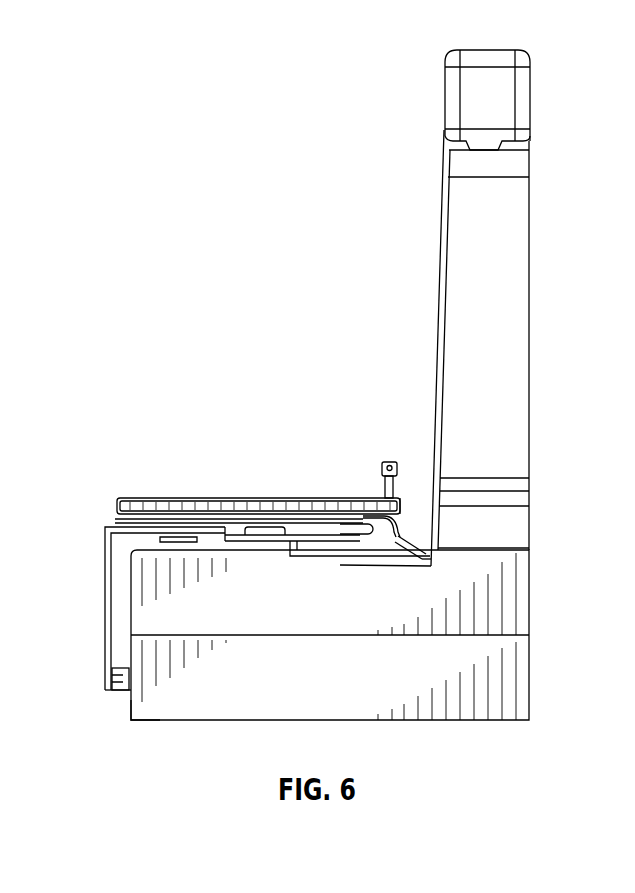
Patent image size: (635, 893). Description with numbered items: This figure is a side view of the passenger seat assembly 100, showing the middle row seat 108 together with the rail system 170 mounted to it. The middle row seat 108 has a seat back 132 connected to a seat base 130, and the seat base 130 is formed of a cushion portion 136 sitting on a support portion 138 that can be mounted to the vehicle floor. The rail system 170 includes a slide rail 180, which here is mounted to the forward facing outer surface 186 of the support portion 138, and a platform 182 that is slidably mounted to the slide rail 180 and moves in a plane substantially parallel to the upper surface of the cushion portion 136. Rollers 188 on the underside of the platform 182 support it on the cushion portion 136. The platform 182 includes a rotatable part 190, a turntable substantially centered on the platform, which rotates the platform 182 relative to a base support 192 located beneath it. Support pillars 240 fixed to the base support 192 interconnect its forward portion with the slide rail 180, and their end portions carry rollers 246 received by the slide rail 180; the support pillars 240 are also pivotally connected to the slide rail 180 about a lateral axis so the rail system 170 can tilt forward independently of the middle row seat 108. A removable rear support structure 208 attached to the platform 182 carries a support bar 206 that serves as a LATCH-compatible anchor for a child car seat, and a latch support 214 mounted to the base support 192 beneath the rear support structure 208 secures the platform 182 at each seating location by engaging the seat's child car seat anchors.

The passenger seat assembly 100 is at (325, 245).
The middle row seat 108 is at (538, 196).
The seat back 132 is at (512, 283).
The rear support structure 208 is at (398, 490).
The seat base 130 is at (511, 609).
The cushion portion 136 is at (317, 627).
The support portion 138 is at (235, 705).
The forward facing outer surface 186 is at (128, 720).
The rail system 170 is at (177, 447).
The platform 182 is at (222, 497).
The rotatable part 190 is at (282, 516).
The support pillars 240 is at (108, 600).
The base support 192 is at (243, 526).
The rollers 188 is at (300, 553).
The latch support 214 is at (380, 536).
The support bar 206 is at (388, 462).
The rollers 246 is at (112, 676).
The slide rail 180 is at (125, 693).